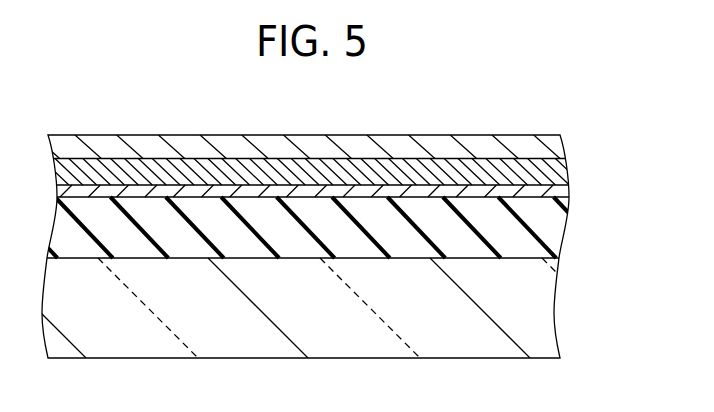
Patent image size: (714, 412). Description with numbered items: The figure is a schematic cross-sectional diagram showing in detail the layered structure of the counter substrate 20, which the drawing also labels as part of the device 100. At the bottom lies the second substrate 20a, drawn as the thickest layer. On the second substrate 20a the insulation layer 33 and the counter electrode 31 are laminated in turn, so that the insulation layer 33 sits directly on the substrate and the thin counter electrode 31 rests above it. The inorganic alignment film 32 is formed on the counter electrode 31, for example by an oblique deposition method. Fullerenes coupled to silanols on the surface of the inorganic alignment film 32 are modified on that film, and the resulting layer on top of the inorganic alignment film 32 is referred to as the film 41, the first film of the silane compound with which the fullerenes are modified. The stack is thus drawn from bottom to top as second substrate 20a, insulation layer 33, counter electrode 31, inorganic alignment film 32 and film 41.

The image display device 100 is at (522, 97).
The counter substrate 20 is at (622, 58).
The second substrate 20a is at (543, 305).
The film of the silane compound 41 is at (558, 147).
The inorganic alignment film 32 is at (560, 172).
The counter electrode 31 is at (560, 190).
The insulation layer 33 is at (556, 227).